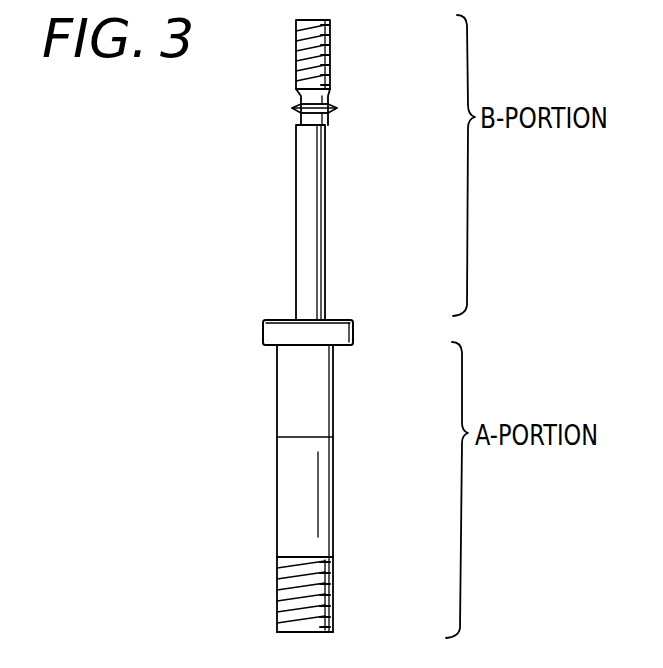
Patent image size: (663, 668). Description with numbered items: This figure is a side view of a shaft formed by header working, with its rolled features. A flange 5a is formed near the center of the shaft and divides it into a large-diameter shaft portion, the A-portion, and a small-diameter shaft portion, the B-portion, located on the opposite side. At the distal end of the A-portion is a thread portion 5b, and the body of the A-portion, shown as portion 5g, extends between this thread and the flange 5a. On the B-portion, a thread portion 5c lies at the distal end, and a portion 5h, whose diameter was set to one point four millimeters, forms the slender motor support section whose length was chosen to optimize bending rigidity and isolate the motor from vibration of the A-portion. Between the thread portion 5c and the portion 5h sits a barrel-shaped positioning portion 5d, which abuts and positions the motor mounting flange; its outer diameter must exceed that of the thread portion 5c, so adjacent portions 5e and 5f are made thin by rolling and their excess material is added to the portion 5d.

The flange 5a is at (269, 330).
The thread portion 5b is at (277, 596).
The thread portion 5c is at (327, 52).
The positioning portion 5d is at (337, 109).
The thin portion 5e is at (294, 107).
The thin portion 5f is at (299, 118).
The cylindrical body portion 5g is at (277, 490).
The shaft portion 5h is at (329, 249).